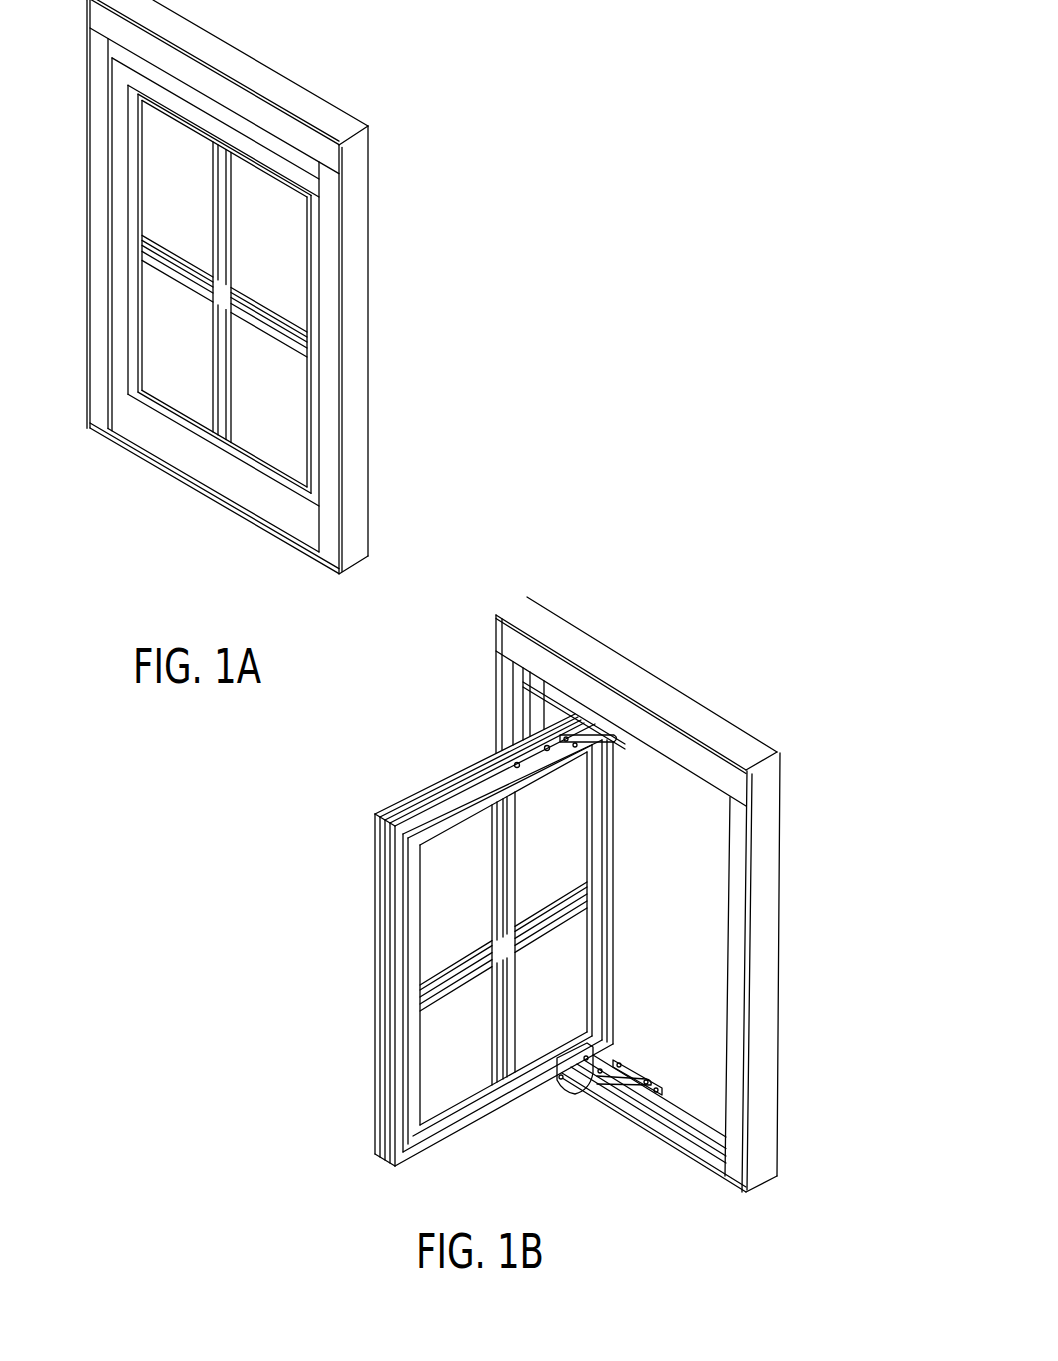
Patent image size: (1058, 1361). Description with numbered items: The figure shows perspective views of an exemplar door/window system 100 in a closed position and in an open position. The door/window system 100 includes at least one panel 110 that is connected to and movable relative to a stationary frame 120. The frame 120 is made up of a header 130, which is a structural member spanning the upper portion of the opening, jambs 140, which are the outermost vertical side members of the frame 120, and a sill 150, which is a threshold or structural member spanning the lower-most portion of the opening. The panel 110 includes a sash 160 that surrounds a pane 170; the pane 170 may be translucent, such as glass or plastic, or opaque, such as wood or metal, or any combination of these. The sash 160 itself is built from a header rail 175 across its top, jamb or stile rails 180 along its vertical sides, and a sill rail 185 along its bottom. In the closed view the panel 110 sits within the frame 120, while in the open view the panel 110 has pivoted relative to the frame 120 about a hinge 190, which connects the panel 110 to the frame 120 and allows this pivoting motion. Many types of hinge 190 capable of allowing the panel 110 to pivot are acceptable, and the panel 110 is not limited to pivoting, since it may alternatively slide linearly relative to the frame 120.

In FIG. 1A, the door/window system 100 is at (263, 322).
In FIG. 1B, the door/window system 100 is at (580, 854).
In FIG. 1A, the panel 110 is at (231, 322).
In FIG. 1B, the panel 110 is at (484, 934).
In FIG. 1A, the frame 120 is at (228, 322).
In FIG. 1B, the frame 120 is at (652, 903).
In FIG. 1A, the header 130 is at (322, 108).
In FIG. 1B, the header 130 is at (738, 742).
In FIG. 1A, the jambs 140 is at (92, 268).
In FIG. 1B, the jambs 140 is at (507, 717).
In FIG. 1A, the sill 150 is at (137, 437).
In FIG. 1B, the sill 150 is at (697, 1148).
In FIG. 1A, the sash 160 is at (207, 469).
In FIG. 1B, the sash 160 is at (360, 1124).
In FIG. 1A, the pane 170 is at (155, 378).
In FIG. 1B, the pane 170 is at (450, 1113).
In FIG. 1A, the header rail 175 is at (313, 185).
In FIG. 1B, the header rail 175 is at (402, 808).
In FIG. 1A, the jamb or stile rail 180 is at (118, 215).
In FIG. 1B, the jamb or stile rail 180 is at (605, 900).
In FIG. 1A, the sill rail 185 is at (253, 487).
In FIG. 1B, the sill rail 185 is at (508, 1112).
In FIG. 1B, the hinge 190 is at (570, 1095).